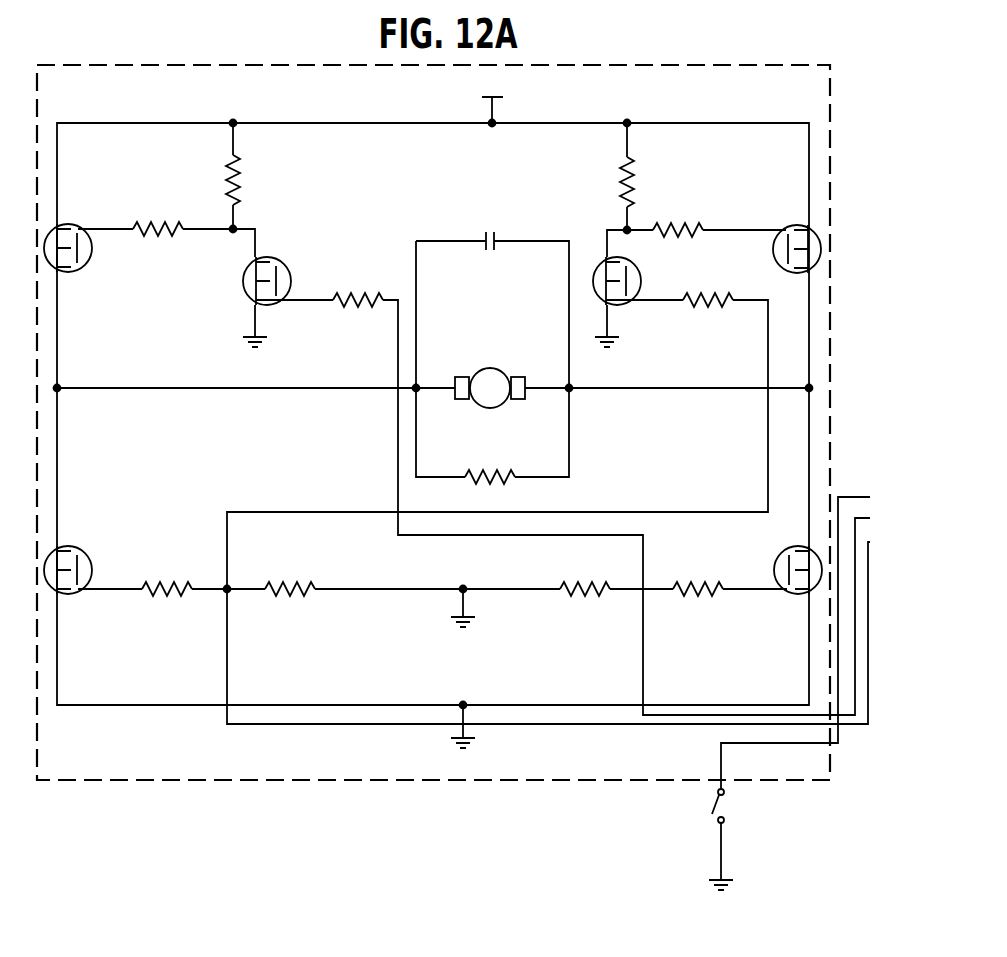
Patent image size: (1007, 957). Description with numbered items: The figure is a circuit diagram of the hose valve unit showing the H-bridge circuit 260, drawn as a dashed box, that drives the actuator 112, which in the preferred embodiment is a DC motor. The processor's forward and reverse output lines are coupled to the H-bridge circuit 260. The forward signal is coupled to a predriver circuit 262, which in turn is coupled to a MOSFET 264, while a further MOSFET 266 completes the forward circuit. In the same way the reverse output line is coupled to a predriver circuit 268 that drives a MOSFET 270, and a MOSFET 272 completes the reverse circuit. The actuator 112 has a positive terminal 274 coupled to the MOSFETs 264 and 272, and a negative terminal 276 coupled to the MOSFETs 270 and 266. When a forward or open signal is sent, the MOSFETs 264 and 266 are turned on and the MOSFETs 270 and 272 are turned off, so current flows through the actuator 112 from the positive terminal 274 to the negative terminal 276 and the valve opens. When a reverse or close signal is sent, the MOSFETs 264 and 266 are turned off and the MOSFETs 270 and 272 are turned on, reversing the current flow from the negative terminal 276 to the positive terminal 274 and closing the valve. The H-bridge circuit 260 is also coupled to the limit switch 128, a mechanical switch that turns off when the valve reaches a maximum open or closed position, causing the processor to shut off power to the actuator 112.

The H-bridge circuit 260 is at (314, 60).
The predriver circuit 262 is at (288, 258).
The MOSFET 264 is at (80, 228).
The MOSFET 266 is at (773, 570).
The predriver circuit 268 is at (598, 266).
The MOSFET 270 is at (783, 232).
The MOSFET 272 is at (87, 547).
The positive terminal 274 is at (418, 386).
The negative terminal 276 is at (569, 388).
The actuator 112 is at (506, 368).
The limit switch 128 is at (728, 812).